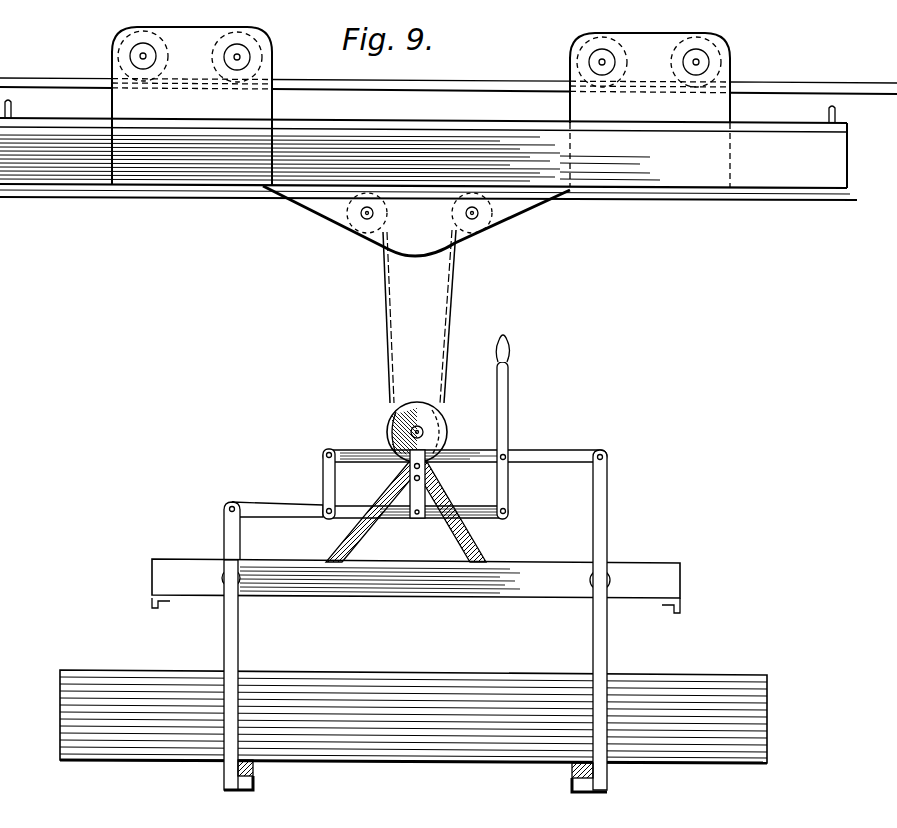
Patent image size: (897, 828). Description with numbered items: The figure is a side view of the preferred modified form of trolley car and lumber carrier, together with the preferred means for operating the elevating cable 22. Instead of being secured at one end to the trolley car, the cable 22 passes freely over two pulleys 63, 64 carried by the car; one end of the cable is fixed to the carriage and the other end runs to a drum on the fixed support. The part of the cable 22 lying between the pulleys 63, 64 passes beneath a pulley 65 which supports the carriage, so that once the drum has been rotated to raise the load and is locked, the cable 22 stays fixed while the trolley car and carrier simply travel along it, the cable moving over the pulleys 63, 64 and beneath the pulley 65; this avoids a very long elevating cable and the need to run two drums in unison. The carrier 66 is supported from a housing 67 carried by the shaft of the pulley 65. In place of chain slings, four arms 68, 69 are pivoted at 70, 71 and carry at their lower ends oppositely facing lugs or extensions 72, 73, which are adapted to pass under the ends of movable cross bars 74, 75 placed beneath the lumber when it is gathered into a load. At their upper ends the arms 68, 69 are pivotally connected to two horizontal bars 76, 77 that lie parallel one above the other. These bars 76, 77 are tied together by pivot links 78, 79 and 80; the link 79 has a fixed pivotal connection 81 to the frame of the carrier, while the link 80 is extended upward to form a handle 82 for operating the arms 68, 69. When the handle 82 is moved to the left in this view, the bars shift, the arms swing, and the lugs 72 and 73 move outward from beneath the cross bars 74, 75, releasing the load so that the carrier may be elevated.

The cable 22 is at (385, 304).
The pulley 63 is at (357, 226).
The pulley 64 is at (485, 226).
The pulley 65 is at (435, 407).
The carrier 66 is at (537, 555).
The housing 67 is at (445, 436).
The arm 68 is at (598, 622).
The arm 69 is at (233, 630).
The pivot 70 is at (607, 574).
The pivot 71 is at (237, 572).
The lug 72 is at (570, 780).
The lug 73 is at (250, 780).
The movable cross bar 74 is at (605, 768).
The movable cross bar 75 is at (227, 762).
The horizontal bar 76 is at (548, 441).
The horizontal bar 77 is at (280, 505).
The pivot link 78 is at (330, 473).
The pivot link 79 is at (428, 488).
The pivot link 80 is at (505, 483).
The fixed pivotal connection 81 is at (410, 475).
The handle 82 is at (508, 345).